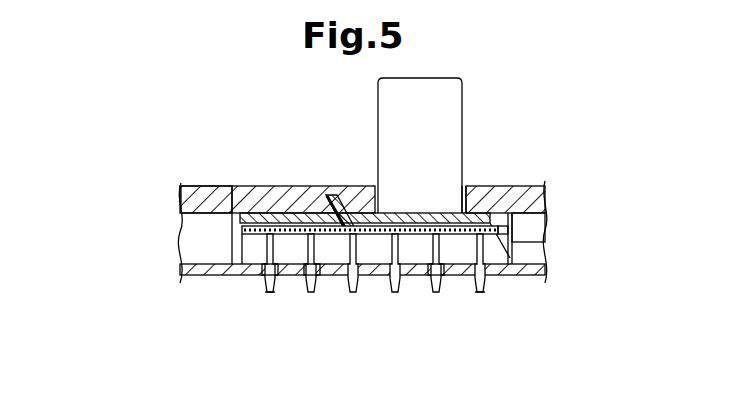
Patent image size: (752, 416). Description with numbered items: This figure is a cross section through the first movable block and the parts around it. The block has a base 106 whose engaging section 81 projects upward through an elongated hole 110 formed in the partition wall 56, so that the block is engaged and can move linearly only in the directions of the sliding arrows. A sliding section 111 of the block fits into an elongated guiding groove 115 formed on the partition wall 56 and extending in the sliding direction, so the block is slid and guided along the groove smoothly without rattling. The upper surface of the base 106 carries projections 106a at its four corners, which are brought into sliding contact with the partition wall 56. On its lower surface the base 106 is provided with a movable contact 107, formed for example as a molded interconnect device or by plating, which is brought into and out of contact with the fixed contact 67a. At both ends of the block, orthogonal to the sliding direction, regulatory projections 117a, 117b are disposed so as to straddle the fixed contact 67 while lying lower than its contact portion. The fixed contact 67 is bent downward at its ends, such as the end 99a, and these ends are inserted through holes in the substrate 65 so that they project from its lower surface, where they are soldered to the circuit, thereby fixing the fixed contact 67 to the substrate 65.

The partition wall 56 is at (522, 186).
The engaging section 81 is at (462, 97).
The elongated hole 110 is at (467, 185).
The guiding groove 115 is at (328, 188).
The sliding section 111 is at (341, 186).
The base 106 is at (337, 236).
The projections 106a is at (226, 188).
The regulatory projection 117a is at (258, 233).
The regulatory projection 117b is at (548, 238).
The substrate 65 is at (547, 268).
The movable contact 107 is at (284, 236).
The end of fixed contact 99a is at (262, 293).
The fixed contact 67a is at (232, 278).
The fixed contact 67 is at (298, 328).